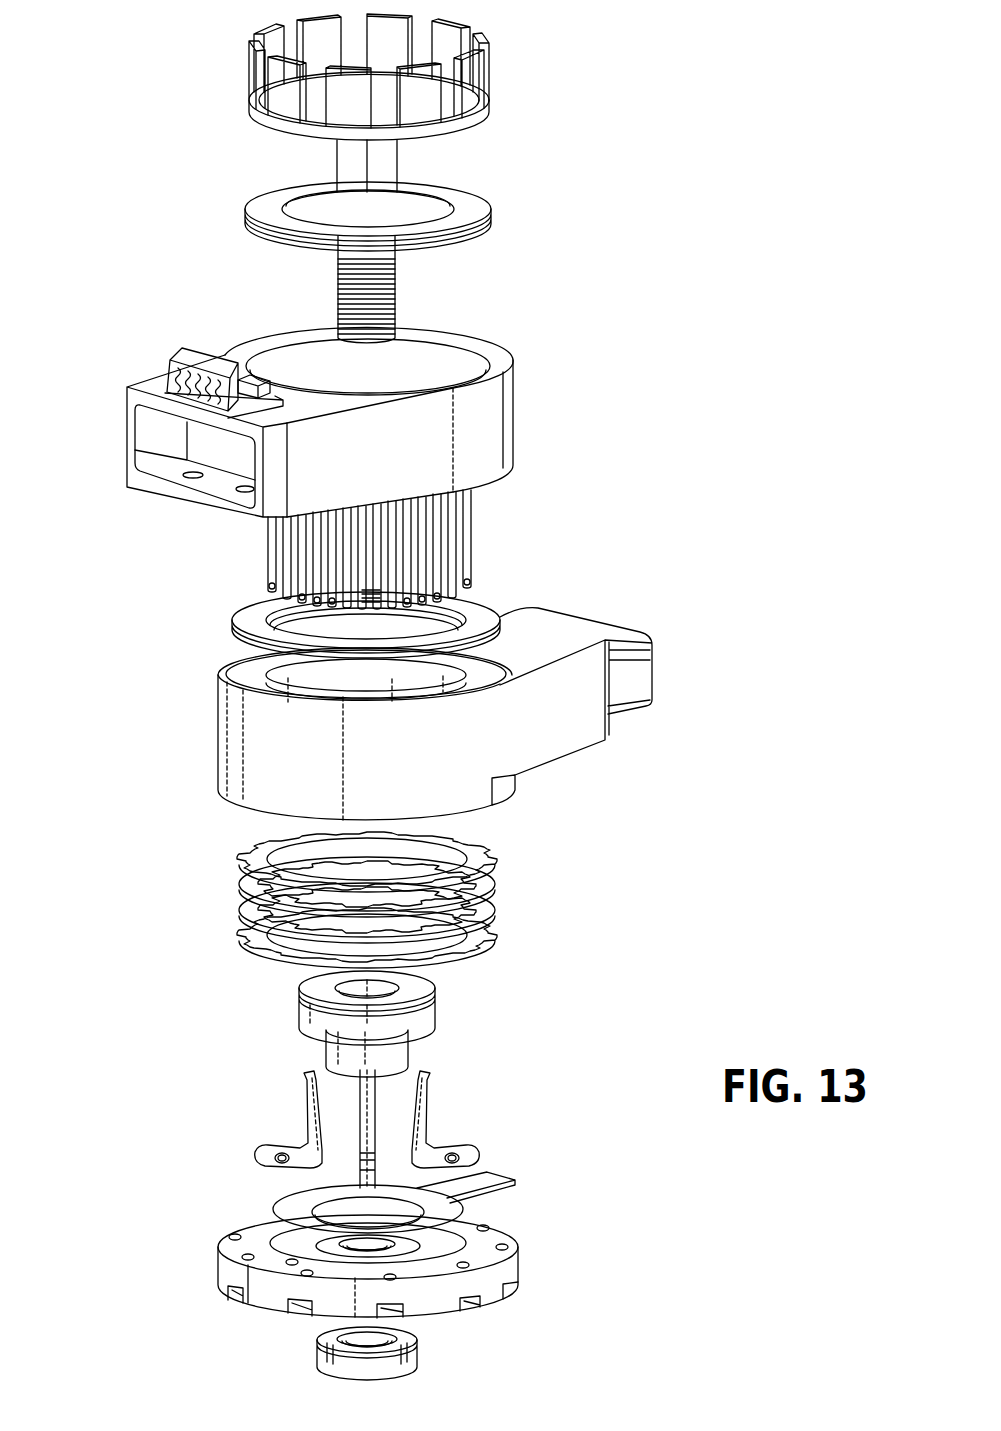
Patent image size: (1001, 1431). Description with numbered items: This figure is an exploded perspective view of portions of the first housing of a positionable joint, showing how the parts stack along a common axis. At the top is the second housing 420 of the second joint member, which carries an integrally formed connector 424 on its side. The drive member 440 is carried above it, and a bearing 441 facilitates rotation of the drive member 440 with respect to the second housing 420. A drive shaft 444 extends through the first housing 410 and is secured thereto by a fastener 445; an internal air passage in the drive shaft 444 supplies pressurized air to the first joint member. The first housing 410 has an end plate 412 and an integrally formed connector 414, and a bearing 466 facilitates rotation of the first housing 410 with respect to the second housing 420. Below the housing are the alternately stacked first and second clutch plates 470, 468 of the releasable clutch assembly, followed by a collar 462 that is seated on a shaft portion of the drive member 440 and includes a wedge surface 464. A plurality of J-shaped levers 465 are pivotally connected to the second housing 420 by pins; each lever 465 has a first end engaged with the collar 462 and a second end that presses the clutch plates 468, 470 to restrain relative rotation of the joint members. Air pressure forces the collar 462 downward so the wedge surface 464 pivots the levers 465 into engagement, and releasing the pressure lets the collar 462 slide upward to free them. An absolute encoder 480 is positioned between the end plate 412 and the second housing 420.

The first housing 410 is at (182, 719).
The end plate 412 is at (515, 1262).
The connector 414 is at (605, 640).
The second housing 420 is at (525, 400).
The connector 424 is at (128, 435).
The drive member 440 is at (485, 88).
The bearing 441 is at (478, 205).
The drive shaft 444 is at (393, 275).
The fastener 445 is at (418, 1350).
The collar 462 is at (430, 1003).
The wedge surface 464 is at (302, 1040).
The J-shaped levers 465 is at (308, 1138).
The bearing 466 is at (482, 604).
The second clutch plates 468 is at (240, 878).
The first clutch plates 470 is at (500, 862).
The absolute encoder 480 is at (290, 1206).